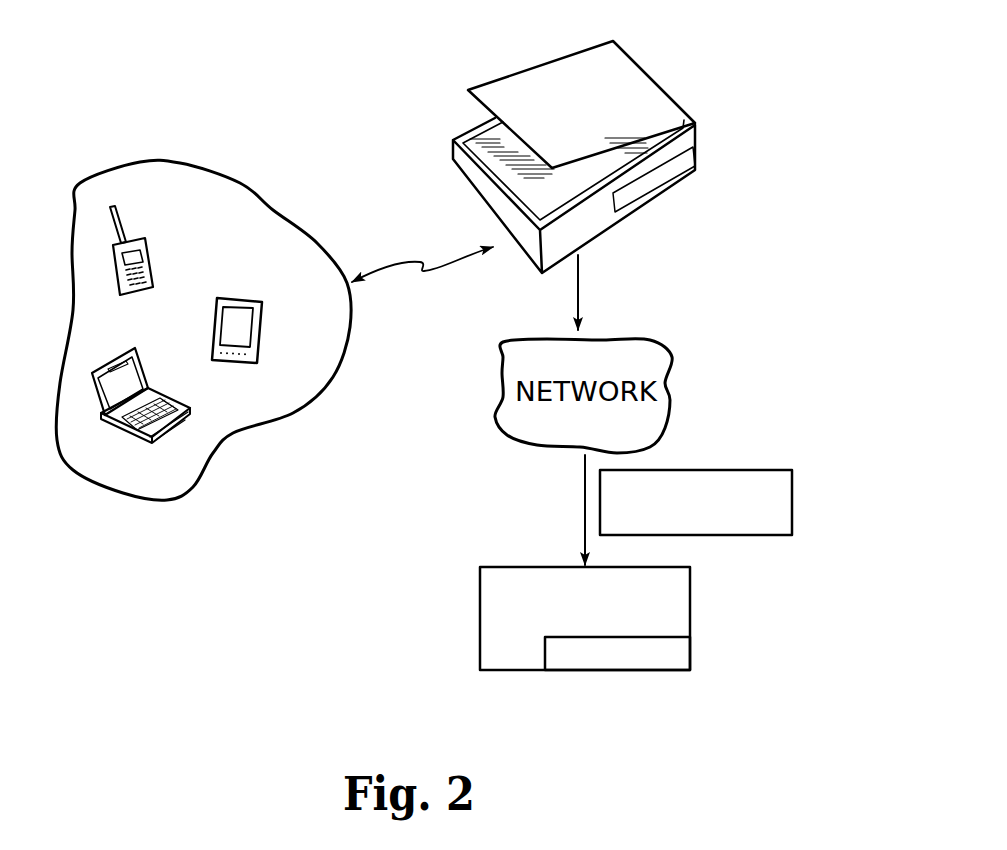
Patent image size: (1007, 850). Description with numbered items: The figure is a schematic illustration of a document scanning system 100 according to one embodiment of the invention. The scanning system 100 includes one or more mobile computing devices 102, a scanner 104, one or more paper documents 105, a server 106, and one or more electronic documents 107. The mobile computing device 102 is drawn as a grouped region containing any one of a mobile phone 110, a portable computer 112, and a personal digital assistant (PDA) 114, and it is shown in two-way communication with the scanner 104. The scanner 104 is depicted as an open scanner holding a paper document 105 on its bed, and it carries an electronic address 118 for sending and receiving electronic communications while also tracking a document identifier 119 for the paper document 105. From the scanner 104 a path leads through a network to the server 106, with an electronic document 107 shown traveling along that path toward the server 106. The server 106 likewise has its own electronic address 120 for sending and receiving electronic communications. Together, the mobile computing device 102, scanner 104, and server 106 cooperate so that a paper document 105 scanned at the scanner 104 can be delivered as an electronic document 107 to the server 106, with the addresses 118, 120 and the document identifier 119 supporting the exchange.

The scanning system 100 is at (305, 62).
The mobile computing device 102 is at (182, 162).
The scanner 104 is at (672, 92).
The paper document 105 is at (570, 180).
The server 106 is at (690, 585).
The electronic document 107 is at (792, 497).
The mobile phone 110 is at (153, 277).
The portable computer 112 is at (140, 355).
The personal digital assistant (PDA) 114 is at (253, 300).
The electronic address 118 is at (680, 180).
The document identifier 119 is at (460, 195).
The electronic address 120 is at (630, 672).